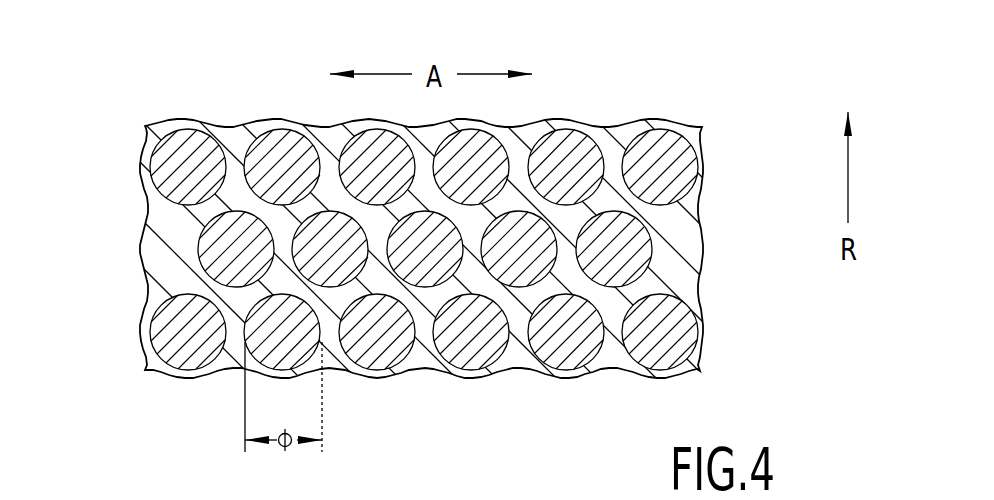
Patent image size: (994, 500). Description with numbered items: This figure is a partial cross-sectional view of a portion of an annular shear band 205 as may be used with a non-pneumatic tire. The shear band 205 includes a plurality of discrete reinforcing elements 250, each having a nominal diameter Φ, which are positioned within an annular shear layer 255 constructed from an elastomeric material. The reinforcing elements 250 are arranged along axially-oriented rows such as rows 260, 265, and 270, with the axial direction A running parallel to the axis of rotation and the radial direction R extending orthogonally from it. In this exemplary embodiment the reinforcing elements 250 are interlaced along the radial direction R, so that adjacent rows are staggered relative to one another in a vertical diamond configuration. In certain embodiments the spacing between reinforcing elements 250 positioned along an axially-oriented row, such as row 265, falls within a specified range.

The annular shear band 205 is at (148, 78).
The reinforcing elements 250 is at (421, 242).
The annular shear layer 255 is at (615, 360).
The row 260 is at (127, 168).
The row 265 is at (128, 250).
The row 270 is at (127, 333).